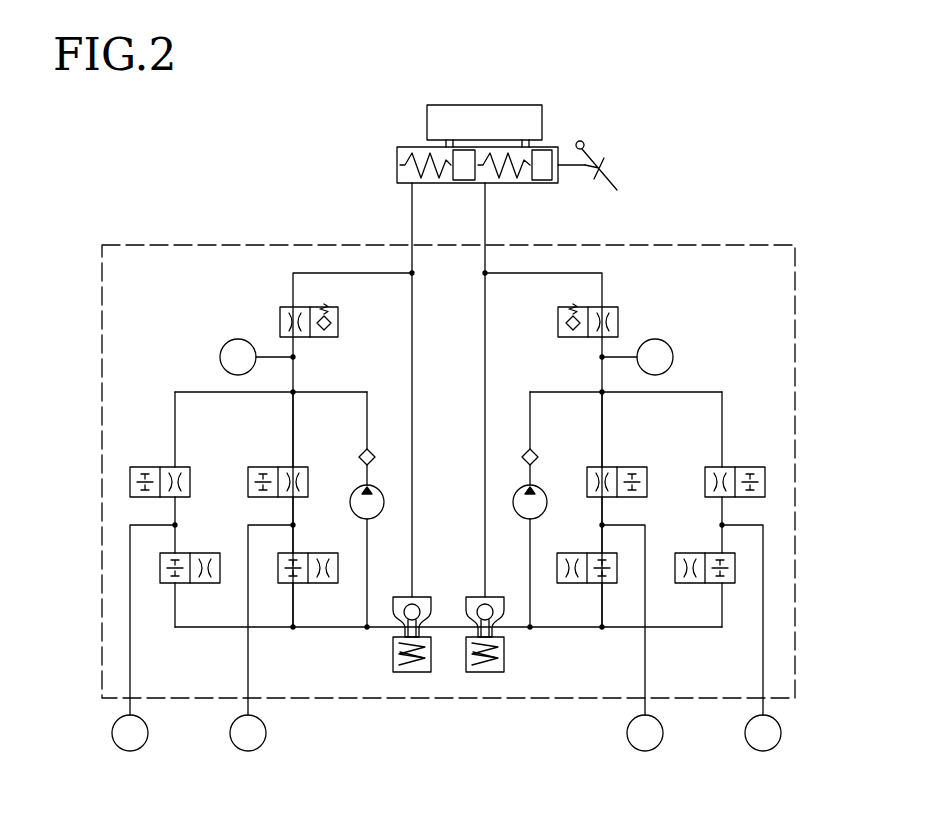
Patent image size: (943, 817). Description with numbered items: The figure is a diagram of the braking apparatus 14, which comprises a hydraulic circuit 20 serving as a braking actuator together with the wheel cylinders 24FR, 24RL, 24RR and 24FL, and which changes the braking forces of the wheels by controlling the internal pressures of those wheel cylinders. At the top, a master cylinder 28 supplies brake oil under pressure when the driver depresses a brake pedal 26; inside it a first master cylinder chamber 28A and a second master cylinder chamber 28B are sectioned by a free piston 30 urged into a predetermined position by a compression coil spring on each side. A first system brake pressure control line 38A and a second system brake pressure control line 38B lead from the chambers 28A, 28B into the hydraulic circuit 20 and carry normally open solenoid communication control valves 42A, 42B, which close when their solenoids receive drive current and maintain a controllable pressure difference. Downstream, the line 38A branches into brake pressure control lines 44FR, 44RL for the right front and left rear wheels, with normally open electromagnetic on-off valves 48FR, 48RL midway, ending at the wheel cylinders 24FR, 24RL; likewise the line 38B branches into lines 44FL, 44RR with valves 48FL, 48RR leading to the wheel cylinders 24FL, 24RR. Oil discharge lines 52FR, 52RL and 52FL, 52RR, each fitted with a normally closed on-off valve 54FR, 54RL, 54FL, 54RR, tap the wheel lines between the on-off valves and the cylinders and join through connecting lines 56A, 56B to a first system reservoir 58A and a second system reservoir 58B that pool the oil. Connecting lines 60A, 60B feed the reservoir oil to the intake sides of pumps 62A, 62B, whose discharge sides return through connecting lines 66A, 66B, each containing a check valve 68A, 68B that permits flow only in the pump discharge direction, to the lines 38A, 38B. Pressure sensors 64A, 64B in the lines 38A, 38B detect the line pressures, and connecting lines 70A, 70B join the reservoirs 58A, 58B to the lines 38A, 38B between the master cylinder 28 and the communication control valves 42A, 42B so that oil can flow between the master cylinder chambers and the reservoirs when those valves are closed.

The braking apparatus 14 is at (278, 146).
The hydraulic circuit 20 is at (665, 243).
The wheel cylinder 24FR is at (146, 745).
The wheel cylinder 24RL is at (264, 745).
The wheel cylinder 24RR is at (629, 745).
The wheel cylinder 24FL is at (747, 745).
The brake pedal 26 is at (608, 157).
The master cylinder 28 is at (415, 147).
The first master cylinder chamber 28A is at (400, 180).
The second master cylinder chamber 28B is at (528, 150).
The free piston 30 is at (464, 183).
The first system brake pressure control line 38A is at (412, 215).
The second system brake pressure control line 38B is at (486, 215).
The first system communication control valve 42A is at (278, 320).
The second system communication control valve 42B is at (620, 320).
The brake pressure control line 44FR is at (173, 430).
The brake pressure control line 44RL is at (292, 410).
The brake pressure control line 44RR is at (604, 410).
The brake pressure control line 44FL is at (745, 410).
The electromagnetic on-off valve 48FR is at (192, 487).
The electromagnetic on-off valve 48RL is at (288, 465).
The electromagnetic on-off valve 48RR is at (610, 465).
The electromagnetic on-off valve 48FL is at (703, 485).
The oil discharge line 52FR is at (218, 630).
The oil discharge line 52RL is at (296, 630).
The oil discharge line 52RR is at (600, 630).
The oil discharge line 52FL is at (668, 630).
The electromagnetic on-off valve 54FR is at (178, 585).
The electromagnetic on-off valve 54RL is at (296, 585).
The electromagnetic on-off valve 54RR is at (600, 585).
The electromagnetic on-off valve 54FL is at (718, 585).
The connecting line 56A is at (384, 632).
The connecting line 56B is at (550, 630).
The first system reservoir 58A is at (412, 672).
The second system reservoir 58B is at (485, 672).
The connecting line 60A is at (368, 570).
The connecting line 60B is at (528, 570).
The pump 62A is at (353, 512).
The pump 62B is at (544, 512).
The pressure sensor 64A is at (220, 357).
The pressure sensor 64B is at (674, 357).
The connecting line 66A is at (367, 437).
The connecting line 66B is at (530, 437).
The check valve 68A is at (362, 452).
The check valve 68B is at (535, 452).
The connecting line 70A is at (412, 470).
The connecting line 70B is at (485, 424).